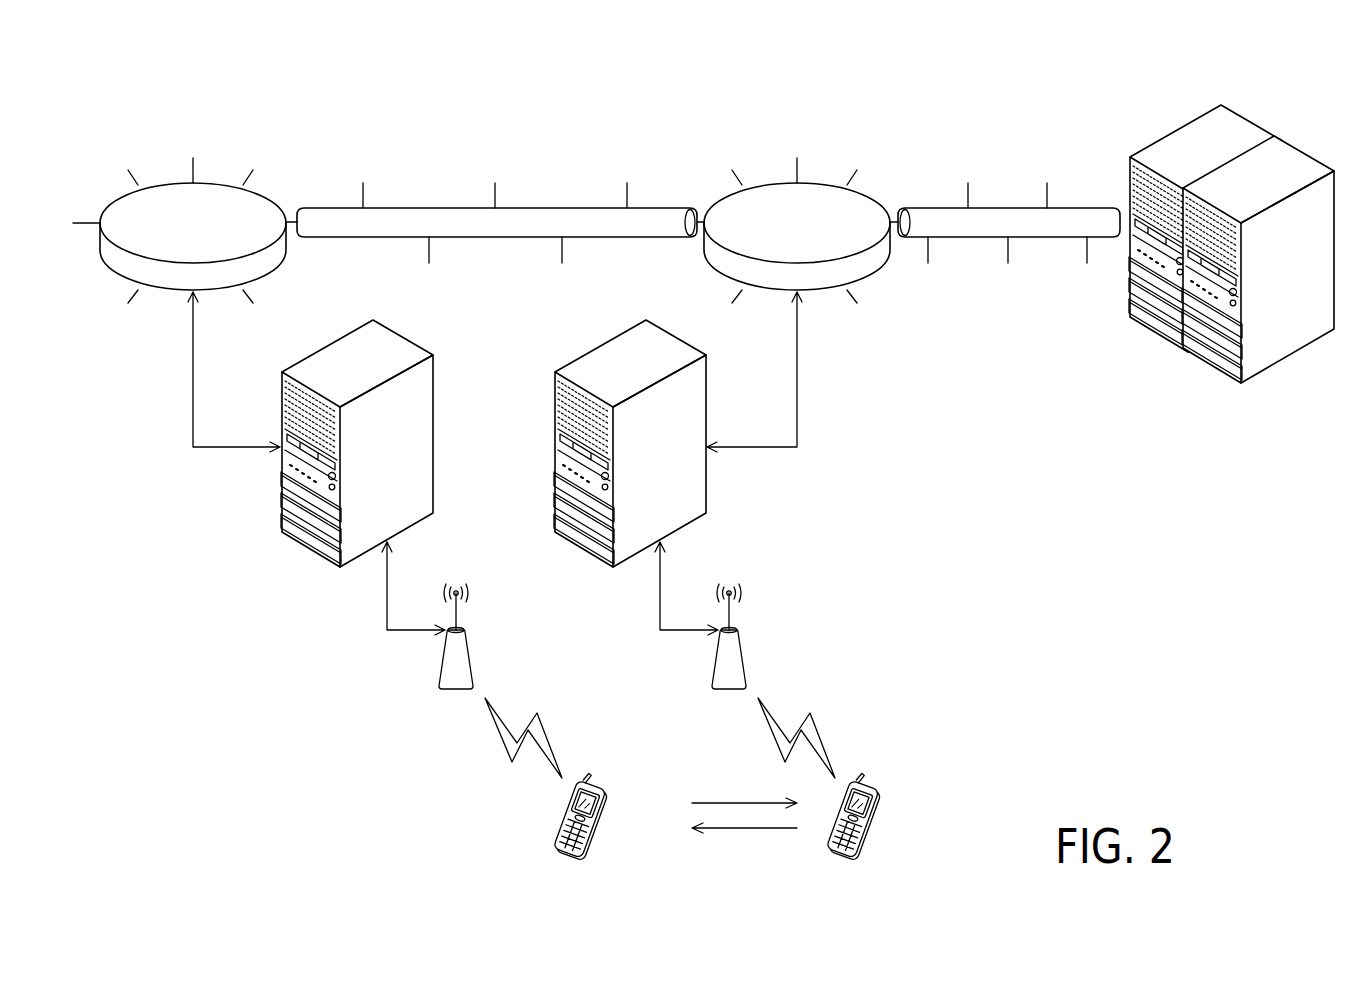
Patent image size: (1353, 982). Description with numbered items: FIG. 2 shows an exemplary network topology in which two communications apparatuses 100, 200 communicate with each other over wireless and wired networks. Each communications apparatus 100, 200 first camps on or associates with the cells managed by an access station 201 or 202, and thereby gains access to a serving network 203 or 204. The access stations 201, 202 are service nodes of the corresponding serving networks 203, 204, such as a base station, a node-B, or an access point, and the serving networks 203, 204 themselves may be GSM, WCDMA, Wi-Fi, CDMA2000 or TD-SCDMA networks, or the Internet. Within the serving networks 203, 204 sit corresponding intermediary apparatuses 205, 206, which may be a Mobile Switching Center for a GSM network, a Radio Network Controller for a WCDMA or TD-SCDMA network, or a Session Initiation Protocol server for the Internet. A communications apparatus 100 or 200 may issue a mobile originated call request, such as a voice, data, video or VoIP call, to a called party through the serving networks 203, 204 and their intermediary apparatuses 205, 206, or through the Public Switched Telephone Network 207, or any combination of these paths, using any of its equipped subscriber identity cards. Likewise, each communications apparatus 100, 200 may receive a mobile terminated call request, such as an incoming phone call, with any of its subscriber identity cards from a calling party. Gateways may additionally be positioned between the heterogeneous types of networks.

The communications apparatus 100 is at (600, 820).
The communications apparatus 200 is at (872, 820).
The access station 201 is at (470, 657).
The access station 202 is at (744, 657).
The serving network 203 is at (163, 183).
The serving network 204 is at (769, 183).
The intermediary apparatus 205 is at (434, 380).
The intermediary apparatus 206 is at (707, 380).
The Public Switched Telephone Network 207 is at (1172, 130).